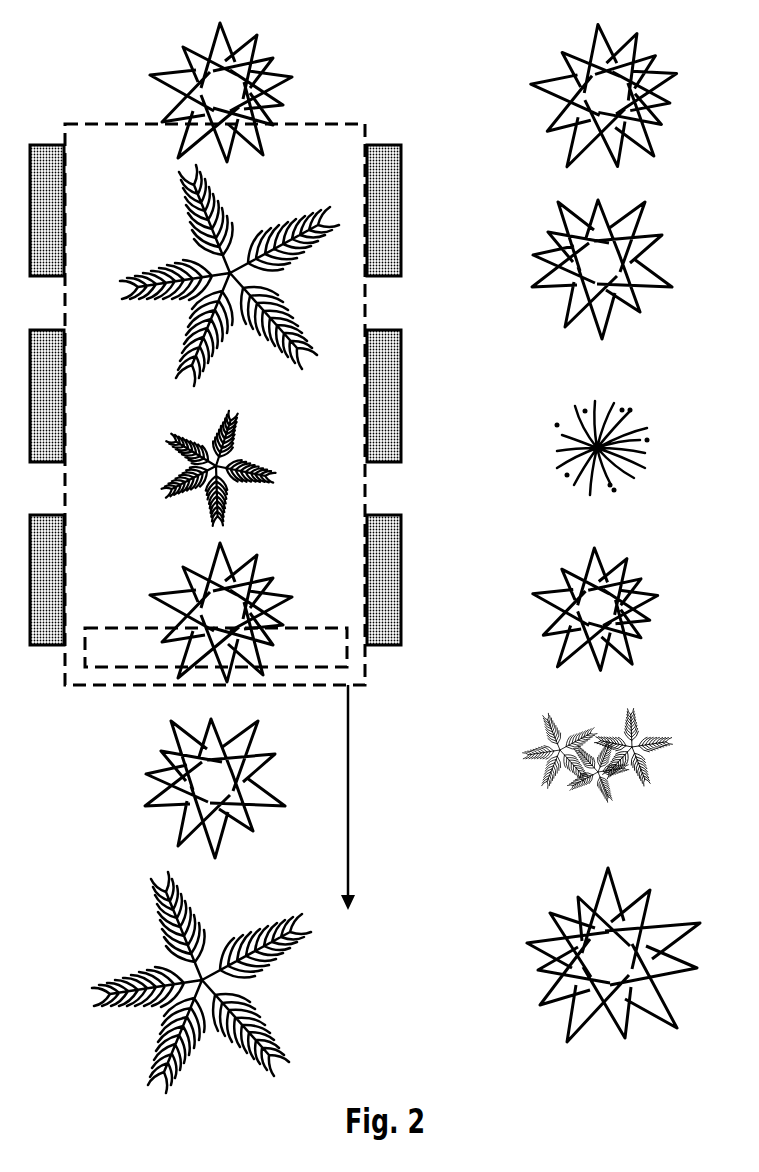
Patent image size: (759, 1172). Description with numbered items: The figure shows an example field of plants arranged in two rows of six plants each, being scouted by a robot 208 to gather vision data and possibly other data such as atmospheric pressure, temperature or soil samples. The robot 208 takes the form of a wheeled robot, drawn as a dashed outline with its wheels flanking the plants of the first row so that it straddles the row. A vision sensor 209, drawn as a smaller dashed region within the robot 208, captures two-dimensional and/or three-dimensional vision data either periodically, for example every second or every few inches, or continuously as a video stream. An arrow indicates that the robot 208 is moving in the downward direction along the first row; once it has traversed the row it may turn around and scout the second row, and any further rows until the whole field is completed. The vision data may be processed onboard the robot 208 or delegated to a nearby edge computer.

The robot 208 is at (366, 312).
The vision sensor 209 is at (310, 628).